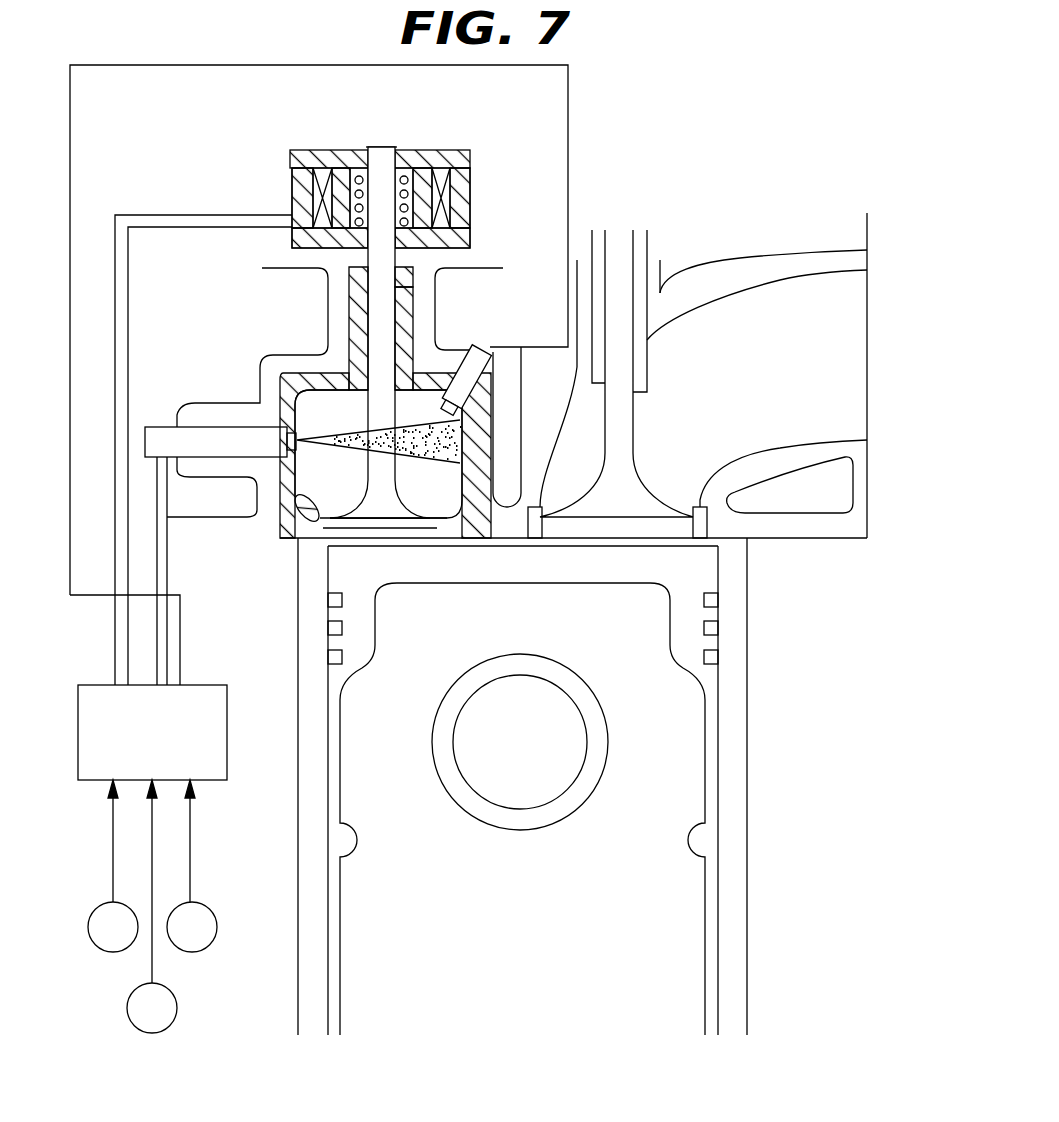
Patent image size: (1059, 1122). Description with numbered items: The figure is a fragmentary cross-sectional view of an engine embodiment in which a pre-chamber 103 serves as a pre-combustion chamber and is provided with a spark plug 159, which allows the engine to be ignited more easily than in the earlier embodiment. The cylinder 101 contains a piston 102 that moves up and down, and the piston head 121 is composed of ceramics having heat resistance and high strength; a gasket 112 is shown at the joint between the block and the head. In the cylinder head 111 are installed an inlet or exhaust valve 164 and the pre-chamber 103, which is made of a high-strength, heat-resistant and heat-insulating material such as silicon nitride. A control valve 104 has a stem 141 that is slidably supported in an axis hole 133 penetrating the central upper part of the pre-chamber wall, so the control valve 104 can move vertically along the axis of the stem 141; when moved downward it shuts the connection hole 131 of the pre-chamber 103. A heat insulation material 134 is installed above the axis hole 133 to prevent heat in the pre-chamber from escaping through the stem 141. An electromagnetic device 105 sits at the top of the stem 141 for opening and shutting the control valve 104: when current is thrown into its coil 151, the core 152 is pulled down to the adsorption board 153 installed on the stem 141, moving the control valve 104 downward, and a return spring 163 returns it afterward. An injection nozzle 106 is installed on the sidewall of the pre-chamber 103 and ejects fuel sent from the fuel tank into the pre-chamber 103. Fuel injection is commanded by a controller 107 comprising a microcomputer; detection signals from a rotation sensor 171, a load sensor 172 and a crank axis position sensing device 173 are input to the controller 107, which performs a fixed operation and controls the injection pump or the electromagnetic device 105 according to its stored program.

The cylinder 101 is at (757, 627).
The piston 102 is at (703, 672).
The pre-chamber 103 is at (407, 460).
The control valve 104 is at (373, 413).
The electromagnetic device 105 is at (476, 188).
The injection nozzle 106 is at (230, 437).
The controller 107 is at (216, 690).
The cylinder head 111 is at (509, 494).
The head gasket 112 is at (660, 546).
The piston head 121 is at (612, 572).
The connection hole 131 is at (393, 548).
The axis hole 133 is at (413, 322).
The heat insulation material 134 is at (413, 280).
The stem 141 is at (395, 250).
The coil 151 is at (292, 190).
The core 152 is at (368, 254).
The adsorption board 153 is at (325, 150).
The spark plug 159 is at (493, 377).
The return spring 163 is at (394, 152).
The inlet valve or exhaust valve 164 is at (623, 433).
The rotation sensor 171 is at (205, 935).
The load sensor 172 is at (177, 1010).
The crank axis position sensing device 173 is at (97, 940).